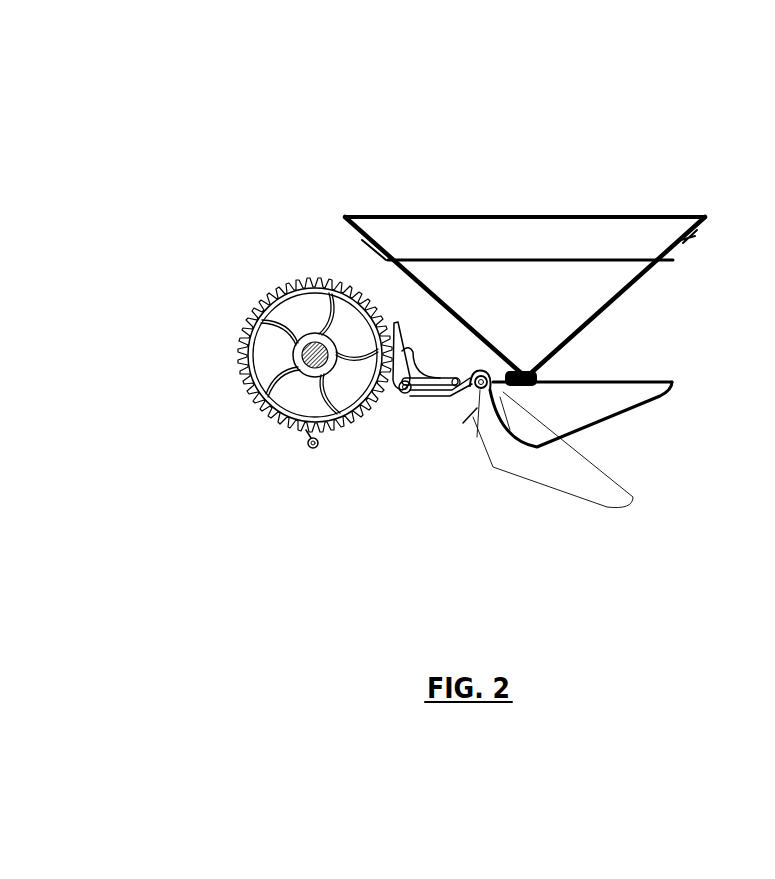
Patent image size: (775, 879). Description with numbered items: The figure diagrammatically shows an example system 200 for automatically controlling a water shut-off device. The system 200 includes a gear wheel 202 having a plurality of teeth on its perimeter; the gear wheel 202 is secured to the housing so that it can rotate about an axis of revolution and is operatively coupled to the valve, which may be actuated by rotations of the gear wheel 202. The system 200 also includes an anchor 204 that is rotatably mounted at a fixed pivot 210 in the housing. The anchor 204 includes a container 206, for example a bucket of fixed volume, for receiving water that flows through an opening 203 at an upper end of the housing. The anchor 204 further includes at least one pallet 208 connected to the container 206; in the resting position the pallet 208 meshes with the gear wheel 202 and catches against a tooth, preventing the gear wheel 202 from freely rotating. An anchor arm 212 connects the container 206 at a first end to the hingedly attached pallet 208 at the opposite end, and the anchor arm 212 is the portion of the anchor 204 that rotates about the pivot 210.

The system 200 is at (446, 156).
The gear wheel 202 is at (268, 288).
The opening 203 is at (521, 372).
The anchor 204 is at (437, 373).
The container 206 is at (605, 408).
The pallet 208 is at (387, 392).
The pivot 210 is at (482, 417).
The anchor arm 212 is at (420, 392).